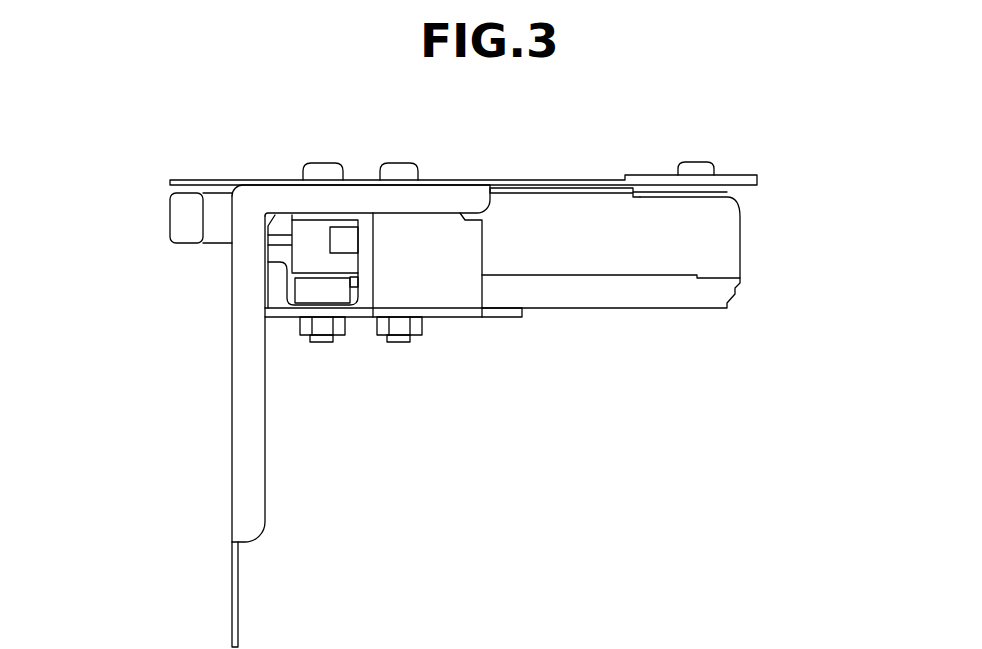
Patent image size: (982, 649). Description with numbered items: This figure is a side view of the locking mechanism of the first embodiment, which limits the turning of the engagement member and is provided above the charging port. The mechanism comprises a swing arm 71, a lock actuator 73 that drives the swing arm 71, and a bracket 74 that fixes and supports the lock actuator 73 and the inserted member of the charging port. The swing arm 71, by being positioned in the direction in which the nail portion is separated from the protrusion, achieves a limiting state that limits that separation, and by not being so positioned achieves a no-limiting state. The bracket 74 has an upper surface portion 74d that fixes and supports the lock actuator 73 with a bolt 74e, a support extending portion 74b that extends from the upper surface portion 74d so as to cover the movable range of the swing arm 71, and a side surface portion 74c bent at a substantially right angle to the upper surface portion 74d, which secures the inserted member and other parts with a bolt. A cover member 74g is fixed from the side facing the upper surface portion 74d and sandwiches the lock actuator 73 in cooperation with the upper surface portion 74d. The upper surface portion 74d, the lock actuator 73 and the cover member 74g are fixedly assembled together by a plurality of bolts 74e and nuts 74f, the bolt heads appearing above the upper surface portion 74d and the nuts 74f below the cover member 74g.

The swing arm 71 is at (187, 215).
The lock actuator 73 is at (760, 225).
The bracket 74 is at (467, 162).
The support extending portion 74b is at (188, 180).
The side surface portion 74c is at (230, 457).
The upper surface portion 74d is at (557, 180).
The bolt 74e is at (323, 163).
The nut 74f is at (305, 335).
The cover member 74g is at (502, 318).